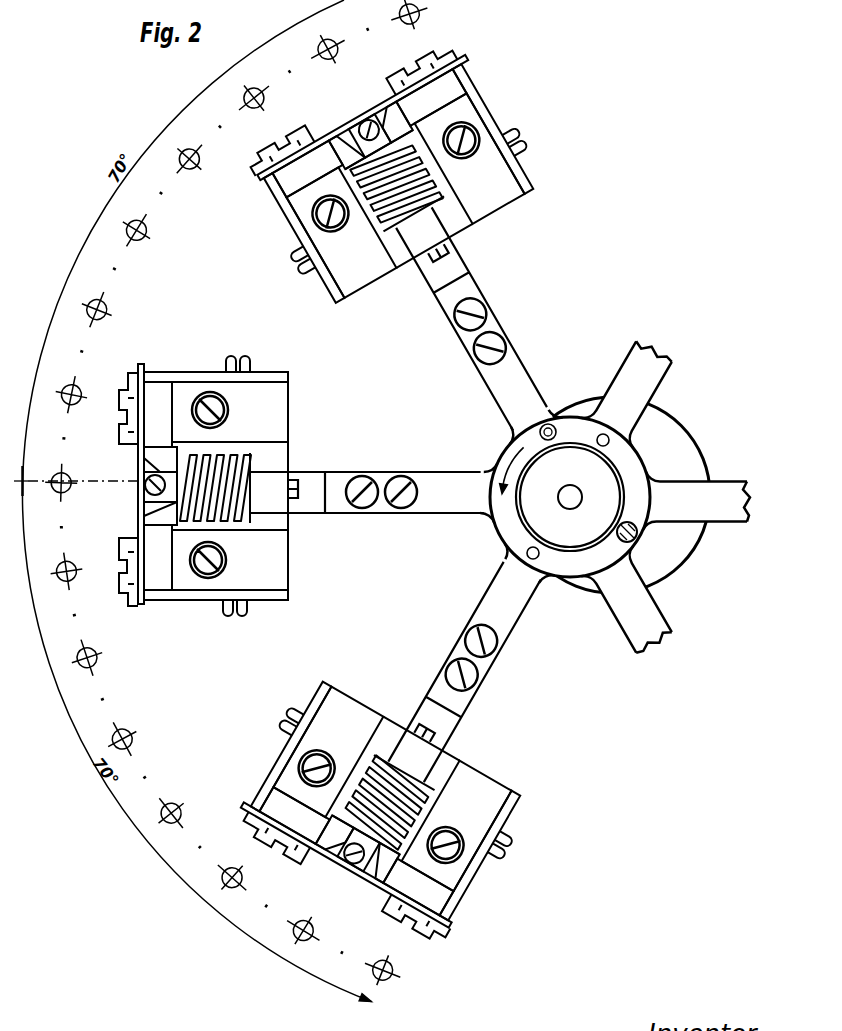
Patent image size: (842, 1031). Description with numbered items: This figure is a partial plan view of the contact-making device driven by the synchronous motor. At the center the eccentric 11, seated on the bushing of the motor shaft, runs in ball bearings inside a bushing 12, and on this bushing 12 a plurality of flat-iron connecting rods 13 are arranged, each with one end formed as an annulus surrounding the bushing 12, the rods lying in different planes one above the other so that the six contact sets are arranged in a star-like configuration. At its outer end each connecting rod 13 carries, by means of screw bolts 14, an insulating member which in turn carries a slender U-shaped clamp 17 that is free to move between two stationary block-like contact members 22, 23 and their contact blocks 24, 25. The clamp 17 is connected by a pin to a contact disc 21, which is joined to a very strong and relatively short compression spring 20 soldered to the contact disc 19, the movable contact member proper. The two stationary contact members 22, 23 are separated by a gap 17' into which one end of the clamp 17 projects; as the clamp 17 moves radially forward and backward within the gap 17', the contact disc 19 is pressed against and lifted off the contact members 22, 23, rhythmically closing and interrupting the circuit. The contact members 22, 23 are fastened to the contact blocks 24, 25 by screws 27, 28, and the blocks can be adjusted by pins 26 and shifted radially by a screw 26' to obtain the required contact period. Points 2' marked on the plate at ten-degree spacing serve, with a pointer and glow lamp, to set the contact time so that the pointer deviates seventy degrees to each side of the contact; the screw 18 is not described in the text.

The eccentric 11 is at (583, 499).
The bushing 12 is at (530, 519).
The connecting rod 13 is at (472, 503).
The screw bolts 14 is at (375, 500).
The U-shaped clamp 17 is at (367, 477).
The gap 17' is at (113, 484).
The pivot screw 18 is at (146, 484).
The contact disc 19 is at (178, 451).
The compression spring 20 is at (226, 460).
The contact disc 21 is at (251, 462).
The stationary contact member 22 is at (160, 392).
The stationary contact member 23 is at (157, 584).
The contact block 24 is at (281, 412).
The contact block 25 is at (278, 576).
The pins 26 is at (238, 486).
The adjusting screw 26' is at (203, 516).
The screw 27 is at (123, 412).
The screw 28 is at (124, 578).
The marked points 2' is at (256, 85).